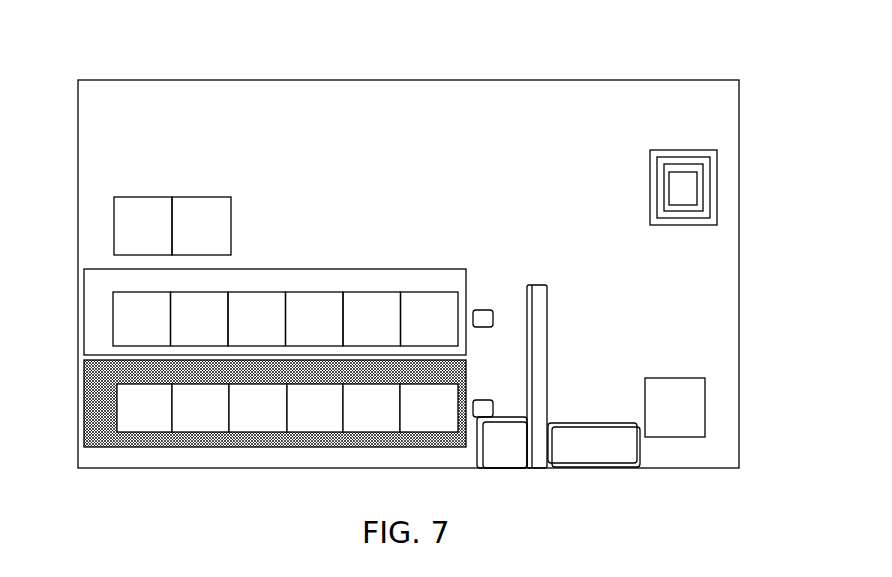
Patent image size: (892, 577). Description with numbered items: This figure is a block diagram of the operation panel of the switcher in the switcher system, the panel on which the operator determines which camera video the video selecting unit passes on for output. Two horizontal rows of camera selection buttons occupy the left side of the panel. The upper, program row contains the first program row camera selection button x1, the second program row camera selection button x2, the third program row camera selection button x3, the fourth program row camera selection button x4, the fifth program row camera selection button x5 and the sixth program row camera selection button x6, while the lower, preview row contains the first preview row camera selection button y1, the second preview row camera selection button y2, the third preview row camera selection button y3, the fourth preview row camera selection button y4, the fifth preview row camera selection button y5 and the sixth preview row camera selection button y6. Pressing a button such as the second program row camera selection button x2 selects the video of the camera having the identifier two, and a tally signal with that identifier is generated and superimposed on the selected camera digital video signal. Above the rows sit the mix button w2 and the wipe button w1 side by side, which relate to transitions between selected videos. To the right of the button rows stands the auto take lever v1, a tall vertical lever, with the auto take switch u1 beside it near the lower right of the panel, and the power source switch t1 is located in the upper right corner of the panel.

The wipe button w1 is at (231, 211).
The mix button w2 is at (114, 226).
The power source switch t1 is at (700, 162).
The auto take switch u1 is at (705, 404).
The auto take lever v1 is at (557, 385).
The program row camera 1 selection button x1 is at (142, 319).
The program row camera 2 selection button x2 is at (200, 319).
The program row camera 3 selection button x3 is at (257, 319).
The program row camera 4 selection button x4 is at (315, 319).
The program row camera 5 selection button x5 is at (372, 319).
The program row camera 6 selection button x6 is at (430, 319).
The preview row camera 1 selection button y1 is at (144, 408).
The preview row camera 2 selection button y2 is at (200, 408).
The preview row camera 3 selection button y3 is at (258, 408).
The preview row camera 4 selection button y4 is at (315, 408).
The preview row camera 5 selection button y5 is at (371, 408).
The preview row camera 6 selection button y6 is at (429, 408).